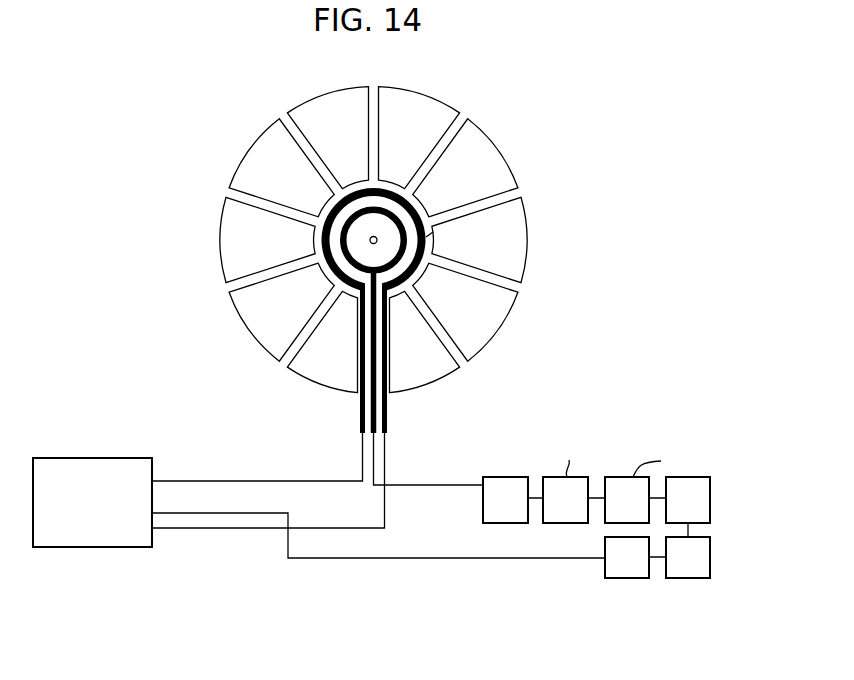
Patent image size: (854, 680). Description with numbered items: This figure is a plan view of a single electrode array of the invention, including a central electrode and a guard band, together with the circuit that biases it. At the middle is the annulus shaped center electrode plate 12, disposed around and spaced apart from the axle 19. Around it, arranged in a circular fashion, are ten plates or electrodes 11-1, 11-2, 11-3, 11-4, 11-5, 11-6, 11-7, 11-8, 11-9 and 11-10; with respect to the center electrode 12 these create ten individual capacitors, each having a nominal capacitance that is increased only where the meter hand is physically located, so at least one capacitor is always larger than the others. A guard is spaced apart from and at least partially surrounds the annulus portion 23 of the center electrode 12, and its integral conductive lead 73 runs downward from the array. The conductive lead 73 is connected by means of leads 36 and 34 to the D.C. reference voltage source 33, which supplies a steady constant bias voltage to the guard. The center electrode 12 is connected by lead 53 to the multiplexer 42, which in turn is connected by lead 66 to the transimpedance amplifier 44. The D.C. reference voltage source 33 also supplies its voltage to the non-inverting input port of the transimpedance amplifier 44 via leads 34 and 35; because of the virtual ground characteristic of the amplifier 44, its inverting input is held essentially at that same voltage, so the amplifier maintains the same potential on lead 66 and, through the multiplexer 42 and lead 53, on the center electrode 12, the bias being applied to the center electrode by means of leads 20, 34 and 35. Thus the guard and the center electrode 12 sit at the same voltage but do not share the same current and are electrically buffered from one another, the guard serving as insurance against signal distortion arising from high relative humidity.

The electrode 11-1 is at (419, 138).
The electrode 11-2 is at (465, 168).
The electrode 11-3 is at (479, 239).
The electrode 11-4 is at (465, 312).
The electrode 11-5 is at (425, 341).
The electrode 11-6 is at (322, 341).
The electrode 11-7 is at (281, 312).
The electrode 11-8 is at (267, 239).
The electrode 11-9 is at (281, 168).
The electrode 11-10 is at (327, 138).
The center electrode plate 12 is at (433, 232).
The axle 19 is at (371, 237).
The lead 20 is at (376, 421).
The annulus portion 23 is at (410, 203).
The conductive lead 73 is at (359, 412).
The D.C. reference voltage source 33 is at (74, 518).
The lead 34 is at (613, 570).
The lead 35 is at (674, 570).
The lead 36 is at (256, 481).
The multiplexer 42 is at (552, 512).
The transimpedance amplifier 44 is at (674, 512).
The lead 53 is at (492, 512).
The lead 66 is at (613, 512).